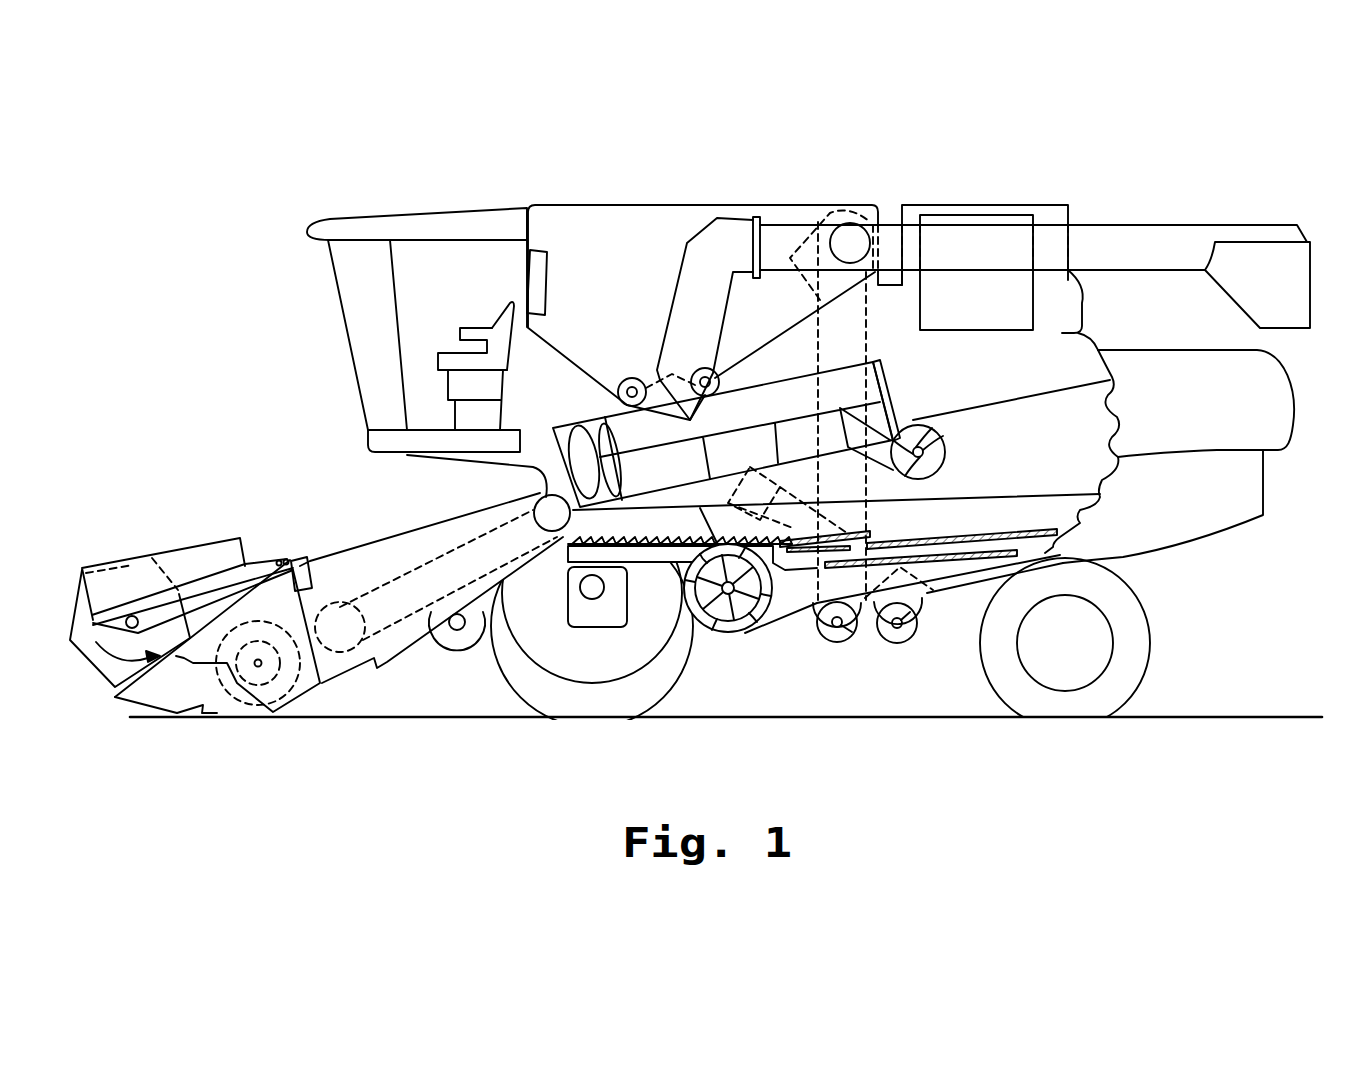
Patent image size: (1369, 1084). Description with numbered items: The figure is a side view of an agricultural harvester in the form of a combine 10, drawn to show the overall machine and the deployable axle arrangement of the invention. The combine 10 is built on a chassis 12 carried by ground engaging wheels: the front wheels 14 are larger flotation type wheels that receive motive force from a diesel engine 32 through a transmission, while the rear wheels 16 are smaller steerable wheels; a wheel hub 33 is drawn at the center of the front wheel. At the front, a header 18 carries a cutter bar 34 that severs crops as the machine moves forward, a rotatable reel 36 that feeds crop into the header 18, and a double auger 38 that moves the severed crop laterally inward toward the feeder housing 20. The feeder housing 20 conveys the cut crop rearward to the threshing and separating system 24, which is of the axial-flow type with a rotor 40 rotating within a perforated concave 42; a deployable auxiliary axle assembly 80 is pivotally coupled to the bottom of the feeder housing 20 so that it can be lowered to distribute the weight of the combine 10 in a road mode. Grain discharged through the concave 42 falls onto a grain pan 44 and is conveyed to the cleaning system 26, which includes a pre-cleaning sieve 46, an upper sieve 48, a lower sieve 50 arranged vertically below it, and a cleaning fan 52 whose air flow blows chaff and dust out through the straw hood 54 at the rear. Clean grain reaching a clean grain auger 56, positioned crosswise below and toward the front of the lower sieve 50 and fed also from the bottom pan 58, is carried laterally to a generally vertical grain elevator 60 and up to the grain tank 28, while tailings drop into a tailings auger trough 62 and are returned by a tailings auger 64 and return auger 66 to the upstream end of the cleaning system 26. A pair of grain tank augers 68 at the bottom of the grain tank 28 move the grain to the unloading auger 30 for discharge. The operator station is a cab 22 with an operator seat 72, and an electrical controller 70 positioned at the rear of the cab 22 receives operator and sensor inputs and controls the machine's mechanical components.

The combine 10 is at (406, 186).
The chassis 12 is at (1123, 557).
The front wheels 14 is at (562, 631).
The rear wheels 16 is at (1142, 657).
The header 18 is at (183, 617).
The feeder housing 20 is at (385, 540).
The cab 22 is at (451, 352).
The threshing and separating system 24 is at (486, 480).
The cleaning system 26 is at (825, 631).
The grain tank 28 is at (583, 212).
The unloading auger 30 is at (1162, 235).
The diesel engine 32 is at (965, 218).
The wheel hub 33 is at (597, 630).
The cutter bar 34 is at (183, 718).
The rotatable reel 36 is at (76, 607).
The double auger 38 is at (258, 686).
The rotor 40 is at (572, 425).
The perforated concave 42 is at (731, 425).
The grain pan 44 is at (563, 550).
The pre-cleaning sieve 46 is at (878, 533).
The upper sieve 48 is at (978, 537).
The lower sieve 50 is at (913, 594).
The cleaning fan 52 is at (733, 622).
The straw hood 54 is at (1275, 393).
The clean grain auger 56 is at (841, 642).
The bottom pan 58 is at (993, 570).
The grain elevator 60 is at (870, 333).
The tailings auger trough 62 is at (975, 575).
The tailings auger 64 is at (897, 645).
The return auger 66 is at (805, 517).
The grain tank augers 68 is at (628, 378).
The electrical controller 70 is at (548, 268).
The operator seat 72 is at (503, 312).
The deployable auxiliary axle assembly 80 is at (453, 645).